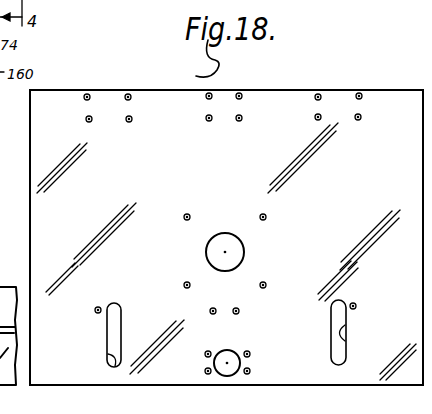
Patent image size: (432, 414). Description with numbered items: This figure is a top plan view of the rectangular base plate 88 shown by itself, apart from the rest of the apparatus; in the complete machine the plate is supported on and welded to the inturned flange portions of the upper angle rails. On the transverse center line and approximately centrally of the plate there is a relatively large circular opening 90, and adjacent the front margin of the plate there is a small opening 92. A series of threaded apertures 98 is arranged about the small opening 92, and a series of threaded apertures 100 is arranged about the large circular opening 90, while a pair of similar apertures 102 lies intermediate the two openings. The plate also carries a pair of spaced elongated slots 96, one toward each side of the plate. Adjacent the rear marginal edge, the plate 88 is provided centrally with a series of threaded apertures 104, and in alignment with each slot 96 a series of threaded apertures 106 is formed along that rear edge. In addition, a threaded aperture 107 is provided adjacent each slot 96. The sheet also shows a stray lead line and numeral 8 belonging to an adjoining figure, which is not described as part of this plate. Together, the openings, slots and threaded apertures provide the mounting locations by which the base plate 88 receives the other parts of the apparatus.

The rectangular base plate 88 is at (344, 100).
The circular opening 90 is at (233, 240).
The small opening 92 is at (227, 370).
The elongated slots 96 is at (113, 362).
The threaded apertures 98 is at (205, 371).
The threaded apertures 100 is at (262, 214).
The apertures 102 is at (215, 314).
The threaded apertures 104 is at (237, 94).
The threaded apertures 106 is at (86, 117).
The threaded aperture 107 is at (98, 307).
The leader to adjacent figure 8 is at (70, 246).